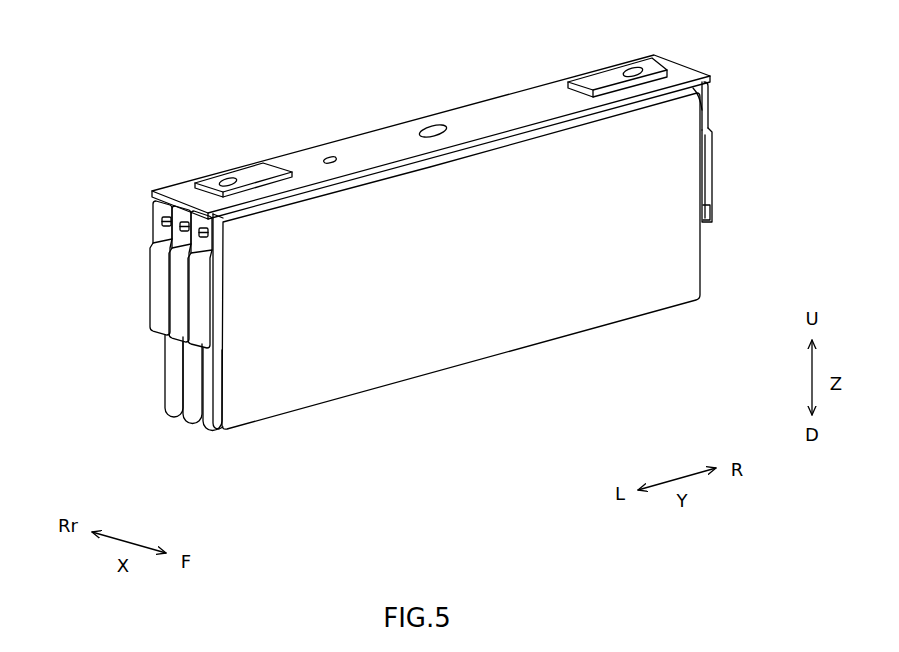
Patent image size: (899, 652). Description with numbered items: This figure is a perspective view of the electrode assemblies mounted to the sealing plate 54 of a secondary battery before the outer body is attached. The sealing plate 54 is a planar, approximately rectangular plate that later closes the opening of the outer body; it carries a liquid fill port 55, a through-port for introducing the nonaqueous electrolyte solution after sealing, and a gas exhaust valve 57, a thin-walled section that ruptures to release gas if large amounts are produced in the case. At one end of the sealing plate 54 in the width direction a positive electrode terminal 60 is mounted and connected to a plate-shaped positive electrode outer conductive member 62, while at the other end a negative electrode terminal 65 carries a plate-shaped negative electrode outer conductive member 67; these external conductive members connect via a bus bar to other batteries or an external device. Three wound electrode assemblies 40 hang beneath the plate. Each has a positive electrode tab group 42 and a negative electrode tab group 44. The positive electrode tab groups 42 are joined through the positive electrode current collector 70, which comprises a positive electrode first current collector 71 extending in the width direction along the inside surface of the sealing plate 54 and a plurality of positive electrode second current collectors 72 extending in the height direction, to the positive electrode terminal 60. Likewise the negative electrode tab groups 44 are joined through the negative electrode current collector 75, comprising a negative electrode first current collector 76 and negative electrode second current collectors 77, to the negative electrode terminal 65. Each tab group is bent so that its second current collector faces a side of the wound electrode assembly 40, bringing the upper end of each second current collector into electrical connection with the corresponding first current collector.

The wound electrode assembly 40 is at (173, 388).
The positive electrode tab group 42 is at (220, 327).
The negative electrode tab group 44 is at (708, 197).
The sealing plate 54 is at (508, 112).
The liquid fill port 55 is at (333, 156).
The gas exhaust valve 57 is at (432, 127).
The positive electrode terminal 60 is at (219, 176).
The positive electrode outer conductive member 62 is at (243, 151).
The negative electrode terminal 65 is at (627, 66).
The negative electrode outer conductive member 67 is at (617, 48).
The positive electrode current collector 70 is at (117, 274).
The positive electrode first current collector 71 is at (205, 262).
The positive electrode second current collector 72 is at (202, 306).
The negative electrode current collector 75 is at (771, 152).
The negative electrode first current collector 76 is at (708, 113).
The negative electrode second current collector 77 is at (716, 152).